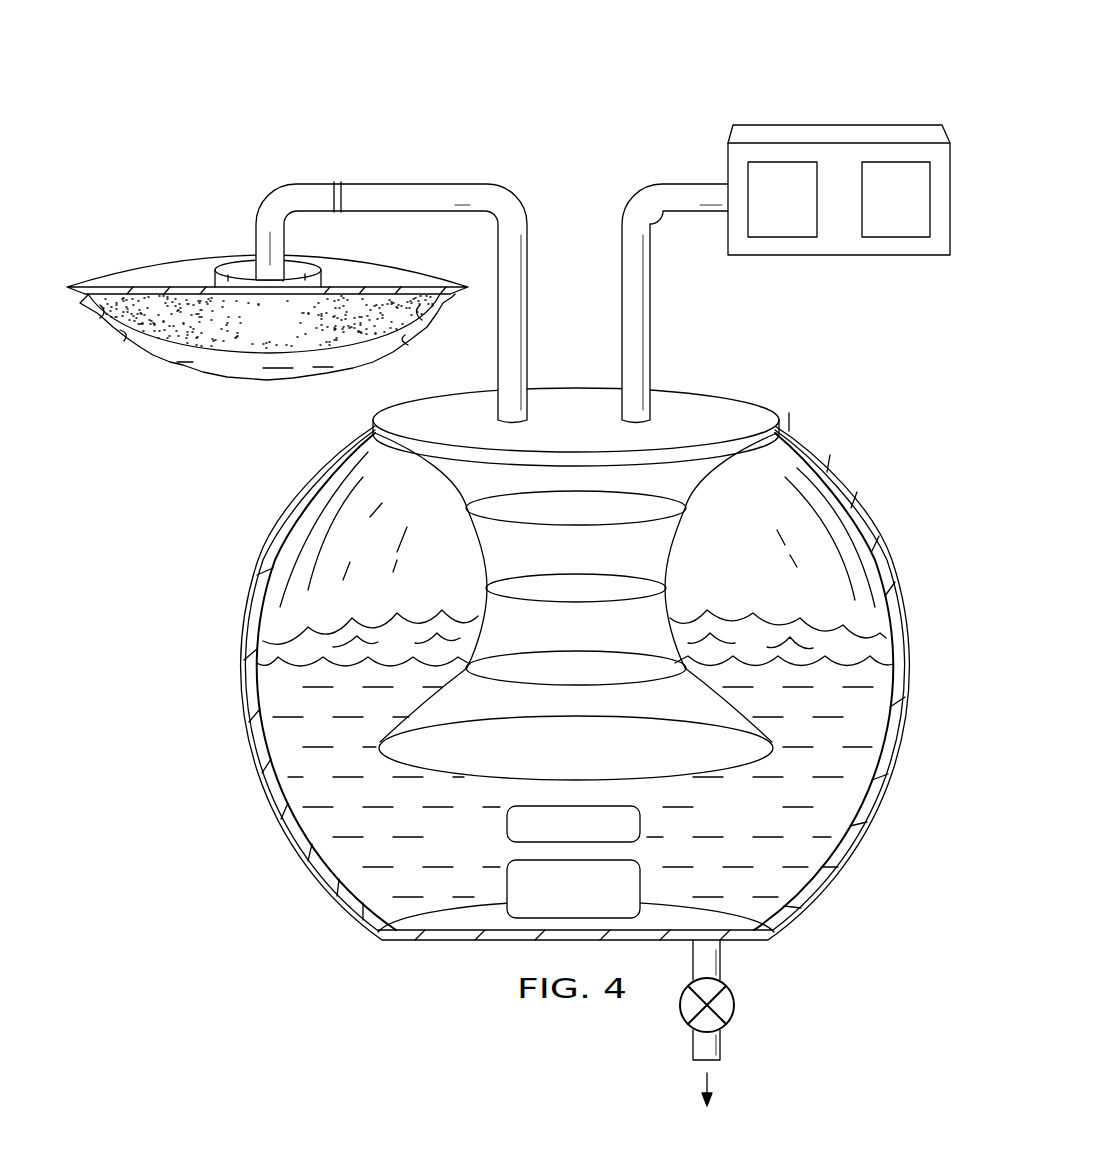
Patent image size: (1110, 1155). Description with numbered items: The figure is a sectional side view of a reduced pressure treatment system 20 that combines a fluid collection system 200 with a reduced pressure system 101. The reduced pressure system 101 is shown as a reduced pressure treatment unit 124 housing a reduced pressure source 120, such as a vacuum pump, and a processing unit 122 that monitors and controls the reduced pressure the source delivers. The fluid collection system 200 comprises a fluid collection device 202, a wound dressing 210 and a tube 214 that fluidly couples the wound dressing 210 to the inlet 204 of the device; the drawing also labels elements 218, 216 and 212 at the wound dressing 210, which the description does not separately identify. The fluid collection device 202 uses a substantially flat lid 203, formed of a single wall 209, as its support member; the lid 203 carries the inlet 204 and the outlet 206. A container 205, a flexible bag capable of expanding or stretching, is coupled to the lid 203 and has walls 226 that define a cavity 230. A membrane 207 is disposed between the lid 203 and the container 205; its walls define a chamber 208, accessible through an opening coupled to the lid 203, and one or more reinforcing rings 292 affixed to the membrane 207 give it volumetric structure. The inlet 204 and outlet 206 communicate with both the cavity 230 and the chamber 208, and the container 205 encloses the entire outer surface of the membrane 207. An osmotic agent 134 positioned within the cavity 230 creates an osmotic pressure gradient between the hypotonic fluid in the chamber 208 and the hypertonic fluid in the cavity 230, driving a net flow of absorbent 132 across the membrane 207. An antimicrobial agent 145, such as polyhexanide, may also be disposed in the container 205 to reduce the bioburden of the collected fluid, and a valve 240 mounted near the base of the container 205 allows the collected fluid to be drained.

The reduced pressure system 101 is at (913, 67).
The reduced pressure treatment system 20 is at (447, 117).
The fluid collection system 200 is at (267, 269).
The tube 214 is at (336, 182).
The outlet 206 is at (696, 184).
The reduced pressure treatment unit 124 is at (839, 162).
The reduced pressure source 120 is at (804, 212).
The processing unit 122 is at (917, 212).
The plate 218 is at (185, 259).
The hub 216 is at (289, 337).
The wound dressing 210 is at (179, 389).
The liner 212 is at (268, 384).
The inlet 204 is at (391, 275).
The single wall 209 is at (576, 412).
The lid 203 is at (717, 400).
The walls 226 is at (809, 441).
The fluid collection device 202 is at (551, 718).
The cavity 230 is at (383, 555).
The membrane 207 is at (478, 543).
The chamber 208 is at (616, 588).
The reinforcing rings 292 is at (688, 494).
The absorbent 132 is at (870, 650).
The container 205 is at (247, 748).
The antimicrobial agent 145 is at (506, 823).
The osmotic agent 134 is at (593, 903).
The valve 240 is at (737, 1005).